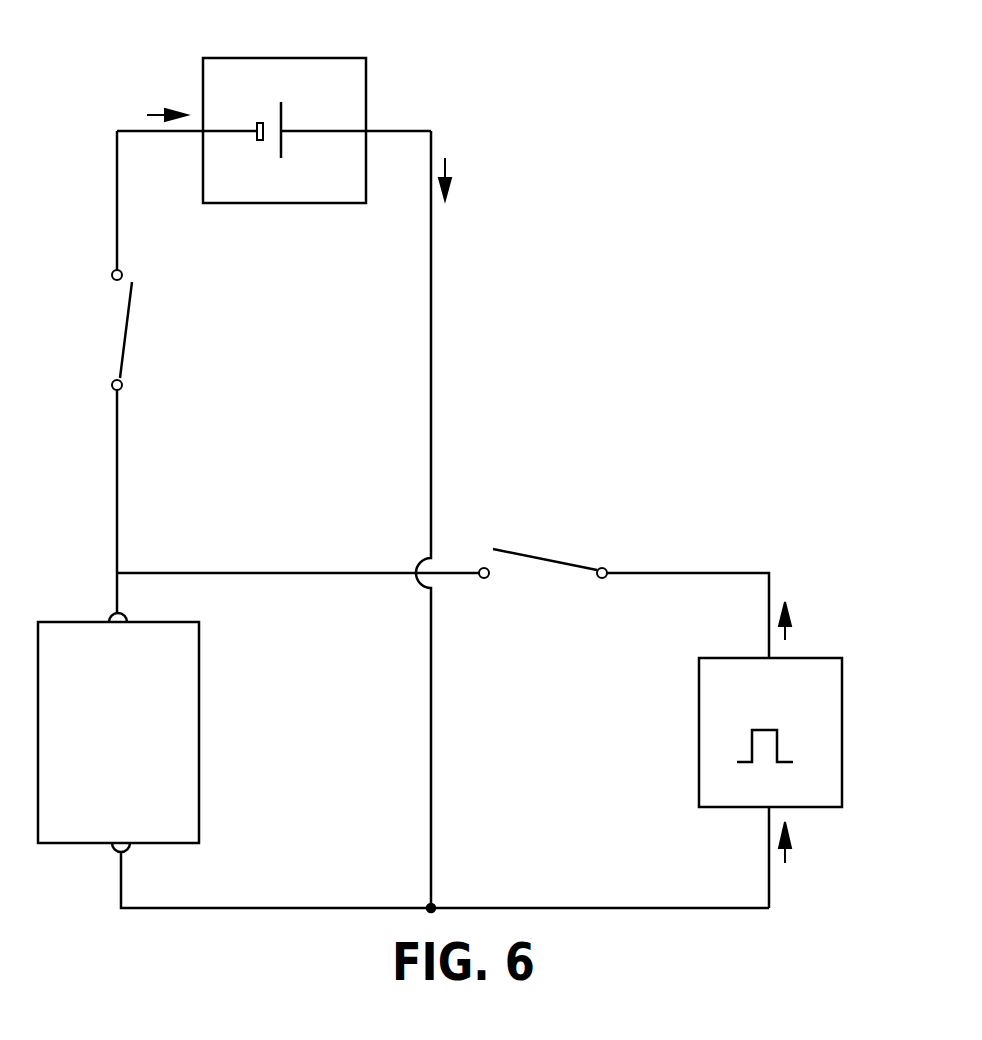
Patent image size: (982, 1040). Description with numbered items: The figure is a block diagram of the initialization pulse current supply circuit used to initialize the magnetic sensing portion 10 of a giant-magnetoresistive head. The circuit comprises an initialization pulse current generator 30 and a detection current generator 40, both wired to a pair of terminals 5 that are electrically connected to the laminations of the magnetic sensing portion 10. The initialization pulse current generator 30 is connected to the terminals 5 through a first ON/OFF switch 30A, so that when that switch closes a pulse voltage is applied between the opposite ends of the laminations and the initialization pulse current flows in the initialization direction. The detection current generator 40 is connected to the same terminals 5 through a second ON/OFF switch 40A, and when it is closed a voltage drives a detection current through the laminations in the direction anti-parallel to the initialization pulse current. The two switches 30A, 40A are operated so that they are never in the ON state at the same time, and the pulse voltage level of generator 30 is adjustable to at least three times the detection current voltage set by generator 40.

The terminals 5 is at (108, 617).
The magnetic sensing portion 10 is at (200, 815).
The initialization pulse current generator 30 is at (812, 657).
The first ON/OFF switch 30A is at (552, 553).
The detection current generator 40 is at (366, 88).
The second ON/OFF switch 40A is at (135, 327).